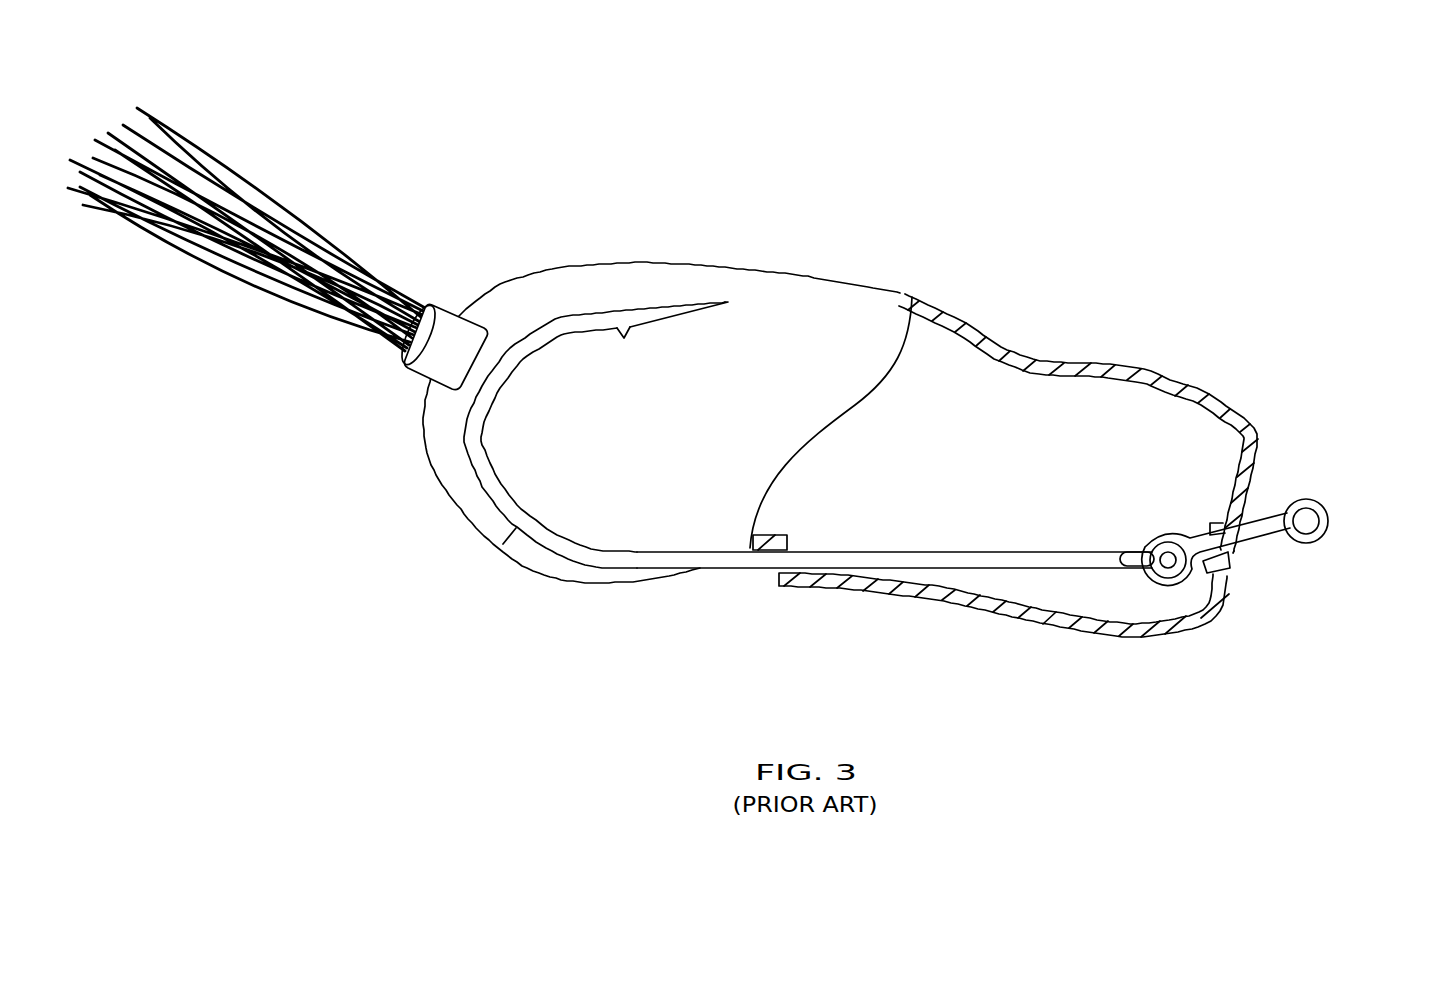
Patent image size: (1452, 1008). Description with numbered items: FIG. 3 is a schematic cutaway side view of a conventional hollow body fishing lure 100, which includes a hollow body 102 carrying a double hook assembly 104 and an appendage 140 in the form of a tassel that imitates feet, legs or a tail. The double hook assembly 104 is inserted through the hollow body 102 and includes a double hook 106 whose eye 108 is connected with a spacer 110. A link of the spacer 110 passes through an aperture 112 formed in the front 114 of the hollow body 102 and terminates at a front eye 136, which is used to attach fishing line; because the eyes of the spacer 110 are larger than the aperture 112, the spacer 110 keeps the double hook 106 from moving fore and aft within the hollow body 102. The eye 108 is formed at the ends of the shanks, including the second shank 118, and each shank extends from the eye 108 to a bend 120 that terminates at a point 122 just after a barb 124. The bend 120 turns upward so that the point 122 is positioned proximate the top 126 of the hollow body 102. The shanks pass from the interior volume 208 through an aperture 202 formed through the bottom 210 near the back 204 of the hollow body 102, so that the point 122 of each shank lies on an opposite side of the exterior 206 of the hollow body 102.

The hollow body fishing lure 100 is at (754, 388).
The hollow body 102 is at (981, 322).
The double hook assembly 104 is at (505, 537).
The double hook 106 is at (808, 386).
The eye 108 is at (1150, 556).
The spacer 110 is at (1305, 490).
The aperture 112 is at (1234, 557).
The front 114 is at (1257, 460).
The second shank 118 is at (983, 560).
The bend 120 is at (485, 495).
The point 122 is at (733, 299).
The barb 124 is at (631, 336).
The top 126 is at (868, 282).
The front eye 136 is at (1323, 503).
The appendage 140 is at (303, 192).
The aperture 202 is at (777, 576).
The back 204 is at (424, 398).
The exterior 206 is at (798, 305).
The interior volume 208 is at (1096, 398).
The bottom 210 is at (817, 588).